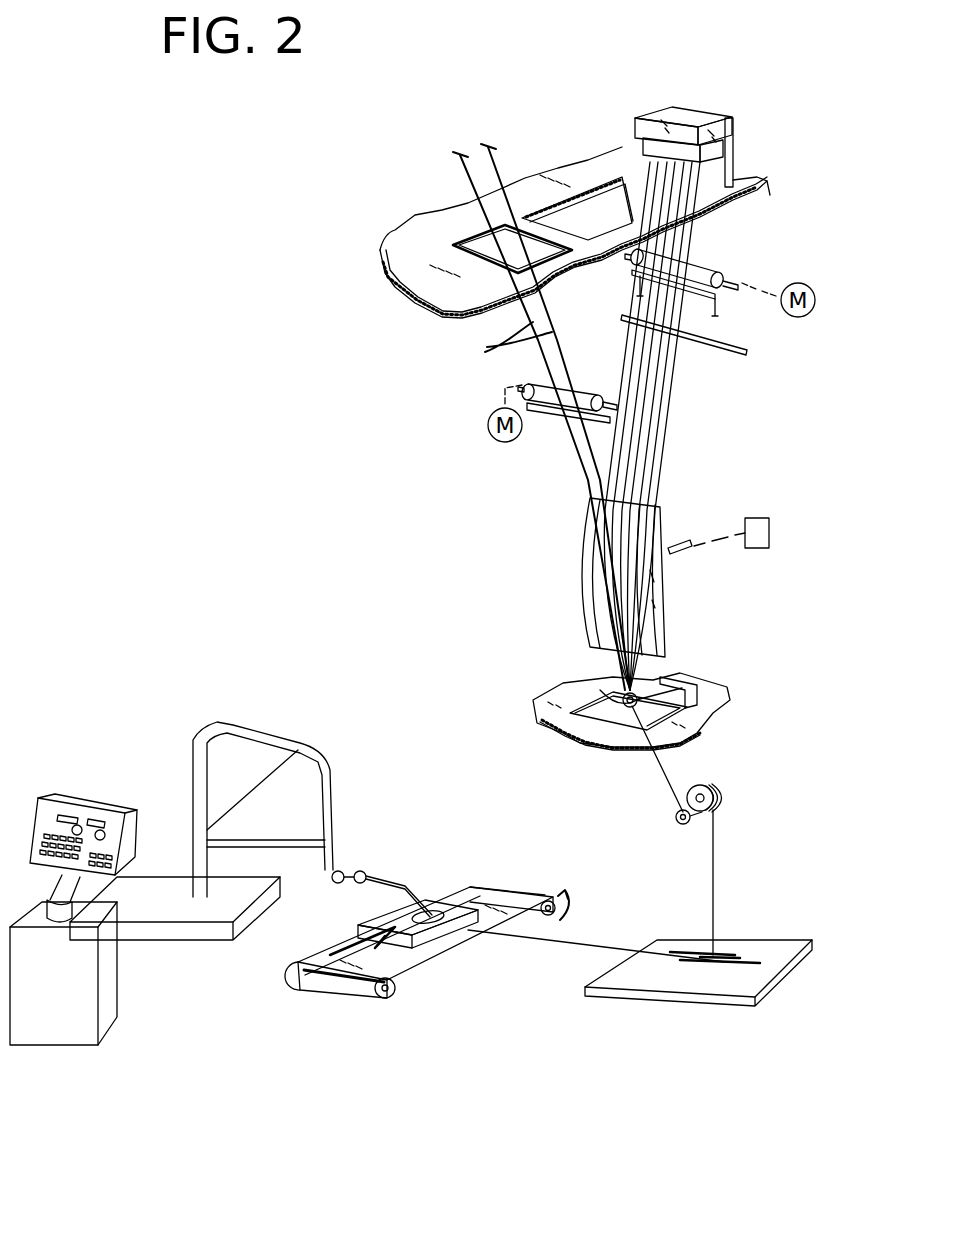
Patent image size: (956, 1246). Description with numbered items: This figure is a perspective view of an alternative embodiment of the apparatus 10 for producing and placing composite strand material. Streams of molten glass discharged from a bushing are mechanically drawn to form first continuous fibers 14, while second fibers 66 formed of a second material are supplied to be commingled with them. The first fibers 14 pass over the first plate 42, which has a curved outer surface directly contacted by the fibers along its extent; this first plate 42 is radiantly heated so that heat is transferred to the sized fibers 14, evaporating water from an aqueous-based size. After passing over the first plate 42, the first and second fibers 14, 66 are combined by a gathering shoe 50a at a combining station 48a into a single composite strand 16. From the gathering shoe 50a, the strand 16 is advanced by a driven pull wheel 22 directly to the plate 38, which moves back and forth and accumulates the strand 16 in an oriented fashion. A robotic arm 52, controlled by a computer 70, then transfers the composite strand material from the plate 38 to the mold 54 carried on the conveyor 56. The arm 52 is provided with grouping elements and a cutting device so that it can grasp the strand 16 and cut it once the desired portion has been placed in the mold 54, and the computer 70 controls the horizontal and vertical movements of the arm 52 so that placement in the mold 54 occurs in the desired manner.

The apparatus 10 is at (750, 112).
The first continuous fibers 14 is at (683, 370).
The composite strand 16 is at (660, 783).
The pull wheel 22 is at (722, 797).
The plate 38 is at (770, 948).
The first plate 42 is at (580, 545).
The combining station 48a is at (735, 650).
The gathering shoe 50a is at (590, 710).
The robotic arm 52 is at (385, 877).
The mold 54 is at (450, 920).
The conveyor 56 is at (425, 972).
The second fibers 66 is at (503, 340).
The computer 70 is at (72, 775).